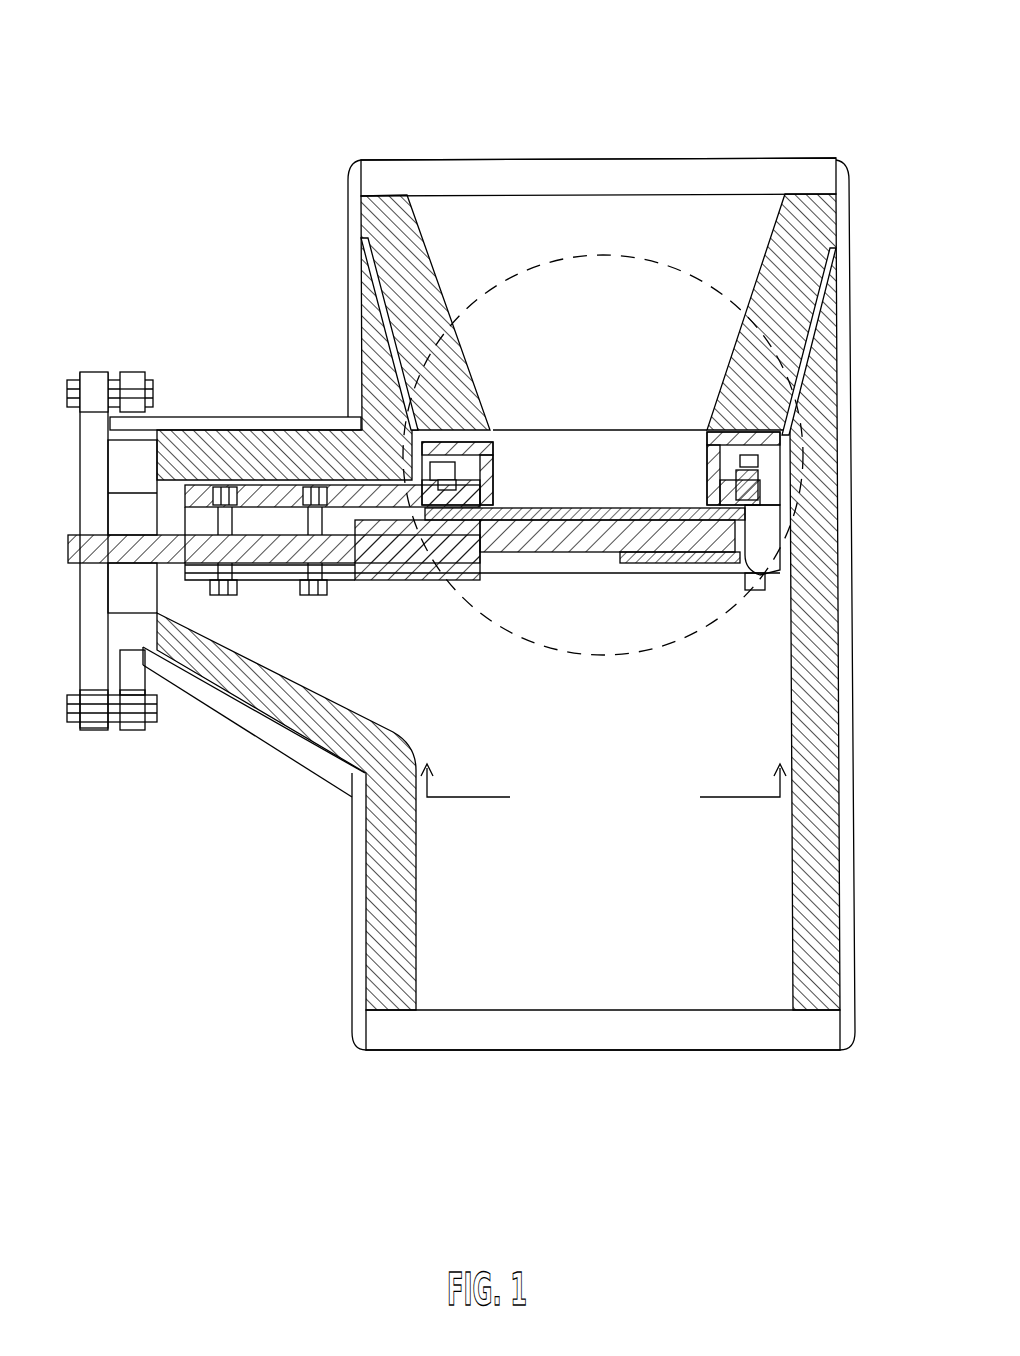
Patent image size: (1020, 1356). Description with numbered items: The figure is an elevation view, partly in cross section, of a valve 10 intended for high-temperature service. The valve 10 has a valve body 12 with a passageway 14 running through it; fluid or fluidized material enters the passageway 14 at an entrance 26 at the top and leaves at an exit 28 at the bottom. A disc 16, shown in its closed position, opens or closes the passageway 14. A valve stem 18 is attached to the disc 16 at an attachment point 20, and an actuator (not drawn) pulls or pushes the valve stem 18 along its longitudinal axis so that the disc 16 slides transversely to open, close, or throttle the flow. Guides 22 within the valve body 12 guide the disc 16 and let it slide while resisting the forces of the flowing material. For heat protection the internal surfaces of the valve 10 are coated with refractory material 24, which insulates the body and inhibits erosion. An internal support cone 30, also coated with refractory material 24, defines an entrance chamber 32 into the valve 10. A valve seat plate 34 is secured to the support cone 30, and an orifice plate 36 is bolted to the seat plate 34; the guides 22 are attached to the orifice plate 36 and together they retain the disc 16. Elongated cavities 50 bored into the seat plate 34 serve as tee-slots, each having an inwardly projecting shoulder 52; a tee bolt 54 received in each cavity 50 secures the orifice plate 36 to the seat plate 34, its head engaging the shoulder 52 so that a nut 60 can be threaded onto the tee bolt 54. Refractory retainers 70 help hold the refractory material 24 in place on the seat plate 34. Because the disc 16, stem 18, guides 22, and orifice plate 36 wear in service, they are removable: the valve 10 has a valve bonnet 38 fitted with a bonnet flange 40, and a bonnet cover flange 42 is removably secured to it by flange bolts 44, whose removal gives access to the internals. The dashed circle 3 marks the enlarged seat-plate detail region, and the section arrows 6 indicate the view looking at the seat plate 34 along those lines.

The valve 10 is at (778, 68).
The valve body 12 is at (853, 575).
The passageway 14 is at (680, 158).
The disc 16 is at (520, 573).
The valve stem 18 is at (68, 545).
The attachment point 20 is at (472, 582).
The guides 22 is at (262, 592).
The refractory material 24 is at (838, 200).
The entrance 26 is at (560, 158).
The exit 28 is at (545, 1050).
The internal support cone 30 is at (366, 285).
The entrance chamber 32 is at (618, 236).
The valve seat plate 34 is at (470, 440).
The orifice plate 36 is at (357, 582).
The valve bonnet 38 is at (192, 417).
The bonnet flange 40 is at (135, 375).
The bonnet cover flange 42 is at (88, 375).
The flange bolts 44 is at (78, 400).
The elongated cavities 50 is at (495, 462).
The shoulder 52 is at (800, 455).
The tee bolt 54 is at (790, 515).
The nut 60 is at (752, 592).
The refractory retainers 70 is at (620, 556).
The section circle 3 is at (532, 662).
The section line 6 is at (603, 773).